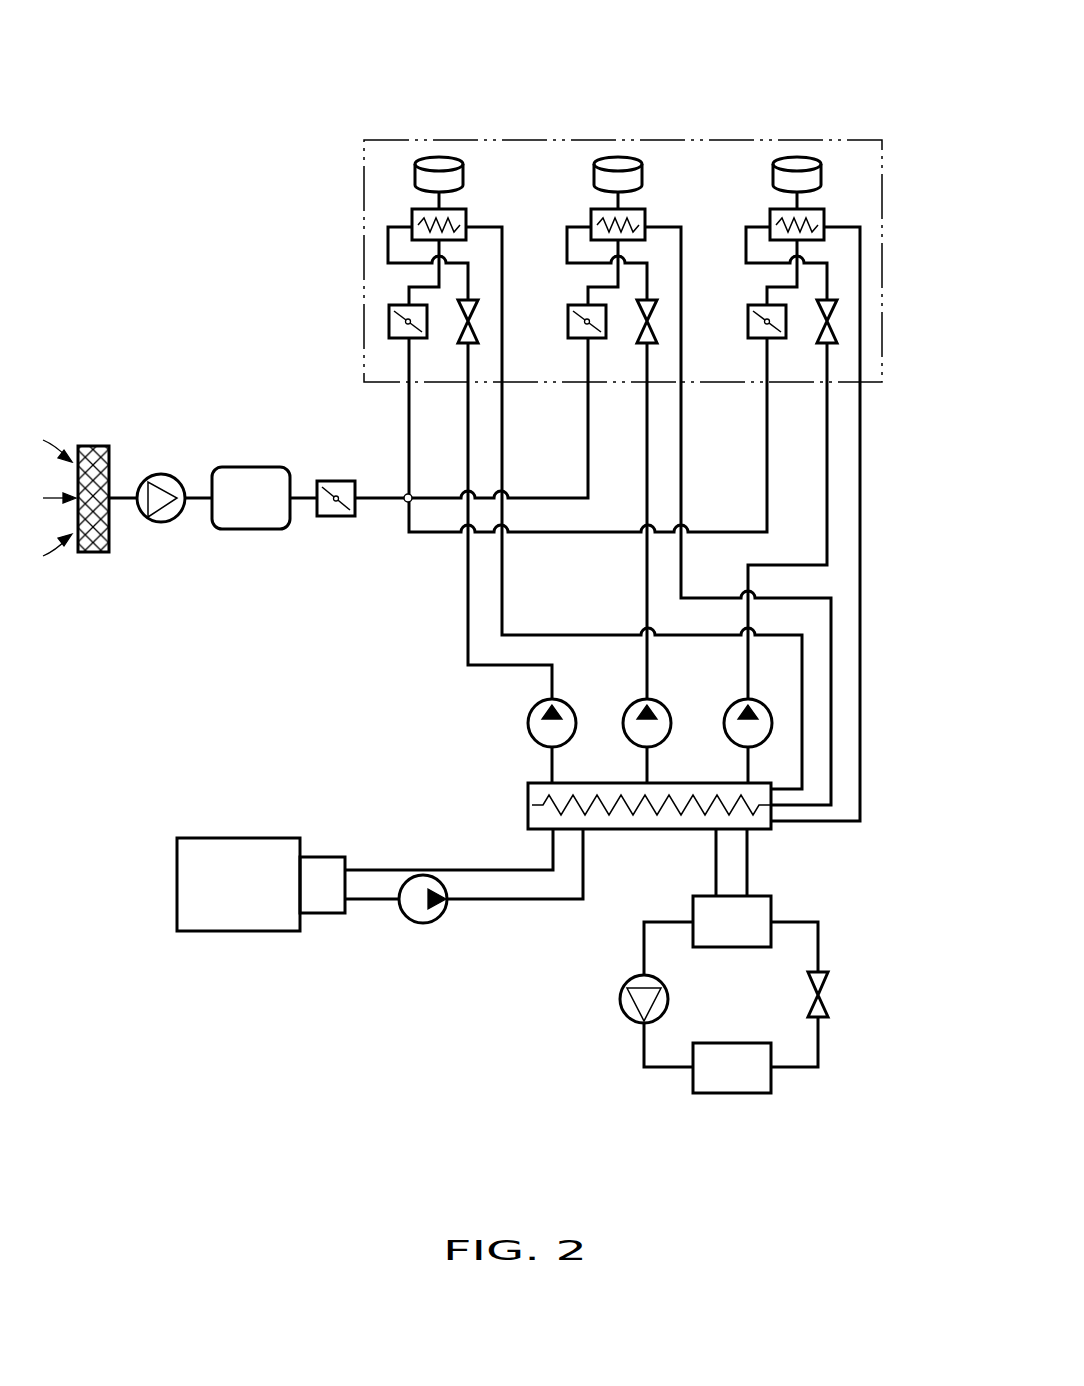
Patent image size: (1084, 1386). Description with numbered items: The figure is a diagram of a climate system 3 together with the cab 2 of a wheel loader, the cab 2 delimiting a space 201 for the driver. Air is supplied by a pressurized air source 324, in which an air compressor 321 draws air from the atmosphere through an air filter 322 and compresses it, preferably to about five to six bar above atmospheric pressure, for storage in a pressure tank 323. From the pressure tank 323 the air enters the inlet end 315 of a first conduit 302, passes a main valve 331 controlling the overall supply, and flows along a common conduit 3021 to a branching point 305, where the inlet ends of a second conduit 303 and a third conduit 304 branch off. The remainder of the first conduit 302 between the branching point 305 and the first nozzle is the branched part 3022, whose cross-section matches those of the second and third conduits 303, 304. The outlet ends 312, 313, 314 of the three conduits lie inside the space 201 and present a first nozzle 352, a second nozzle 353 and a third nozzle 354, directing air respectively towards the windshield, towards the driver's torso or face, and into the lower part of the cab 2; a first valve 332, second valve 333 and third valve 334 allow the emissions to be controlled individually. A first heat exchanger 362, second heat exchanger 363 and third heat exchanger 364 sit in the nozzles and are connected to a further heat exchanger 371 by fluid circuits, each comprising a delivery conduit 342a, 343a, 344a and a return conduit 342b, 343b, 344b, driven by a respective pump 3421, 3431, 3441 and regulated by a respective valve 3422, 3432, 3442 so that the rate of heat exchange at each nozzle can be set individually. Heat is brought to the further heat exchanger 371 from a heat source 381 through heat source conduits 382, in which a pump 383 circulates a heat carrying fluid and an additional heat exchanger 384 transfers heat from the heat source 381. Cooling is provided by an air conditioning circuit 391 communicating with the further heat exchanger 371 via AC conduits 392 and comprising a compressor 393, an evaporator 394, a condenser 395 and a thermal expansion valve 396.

The cab 2 is at (615, 211).
The space 201 is at (380, 165).
The outlet end of first conduit 312 is at (393, 116).
The outlet end of second conduit 313 is at (572, 116).
The outlet end of third conduit 314 is at (750, 116).
The first nozzle 352 is at (437, 158).
The second nozzle 353 is at (617, 158).
The third nozzle 354 is at (796, 158).
The first heat exchanger 362 is at (412, 212).
The second heat exchanger 363 is at (591, 212).
The third heat exchanger 364 is at (770, 212).
The first valve 332 is at (389, 320).
The second valve 333 is at (569, 307).
The third valve 334 is at (747, 307).
The valve of first fluid circuit 3422 is at (460, 343).
The valve of second fluid circuit 3432 is at (640, 345).
The valve of third fluid circuit 3442 is at (838, 333).
The delivery conduit of first fluid circuit 342a is at (470, 447).
The return conduit of first fluid circuit 342b is at (504, 412).
The delivery conduit of second fluid circuit 343a is at (650, 447).
The return conduit of second fluid circuit 343b is at (684, 412).
The delivery conduit of third fluid circuit 344a is at (830, 447).
The return conduit of third fluid circuit 344b is at (863, 412).
The first conduit 302 is at (632, 483).
The common conduit 3021 is at (379, 503).
The branched part of first conduit 3022 is at (410, 477).
The second conduit 303 is at (590, 477).
The third conduit 304 is at (770, 468).
The branching point 305 is at (410, 503).
The inlet end of first conduit 315 is at (293, 503).
The air compressor 321 is at (175, 477).
The air filter 322 is at (100, 446).
The pressure tank 323 is at (253, 467).
The main valve 331 is at (335, 481).
The pressurized air source 324 is at (171, 514).
The climate system 3 is at (622, 528).
The pump of first fluid circuit 3421 is at (527, 722).
The pump of second fluid circuit 3431 is at (642, 745).
The pump of third fluid circuit 3441 is at (740, 746).
The further heat exchanger 371 is at (528, 793).
The heat source 381 is at (177, 885).
The additional heat exchanger 384 is at (323, 913).
The pump 383 is at (417, 923).
The heat source conduits 382 is at (517, 901).
The air conditioning circuit 391 is at (719, 992).
The AC conduits 392 is at (747, 864).
The compressor 393 is at (620, 1000).
The evaporator 394 is at (773, 937).
The condenser 395 is at (720, 1093).
The thermal expansion valve 396 is at (828, 983).